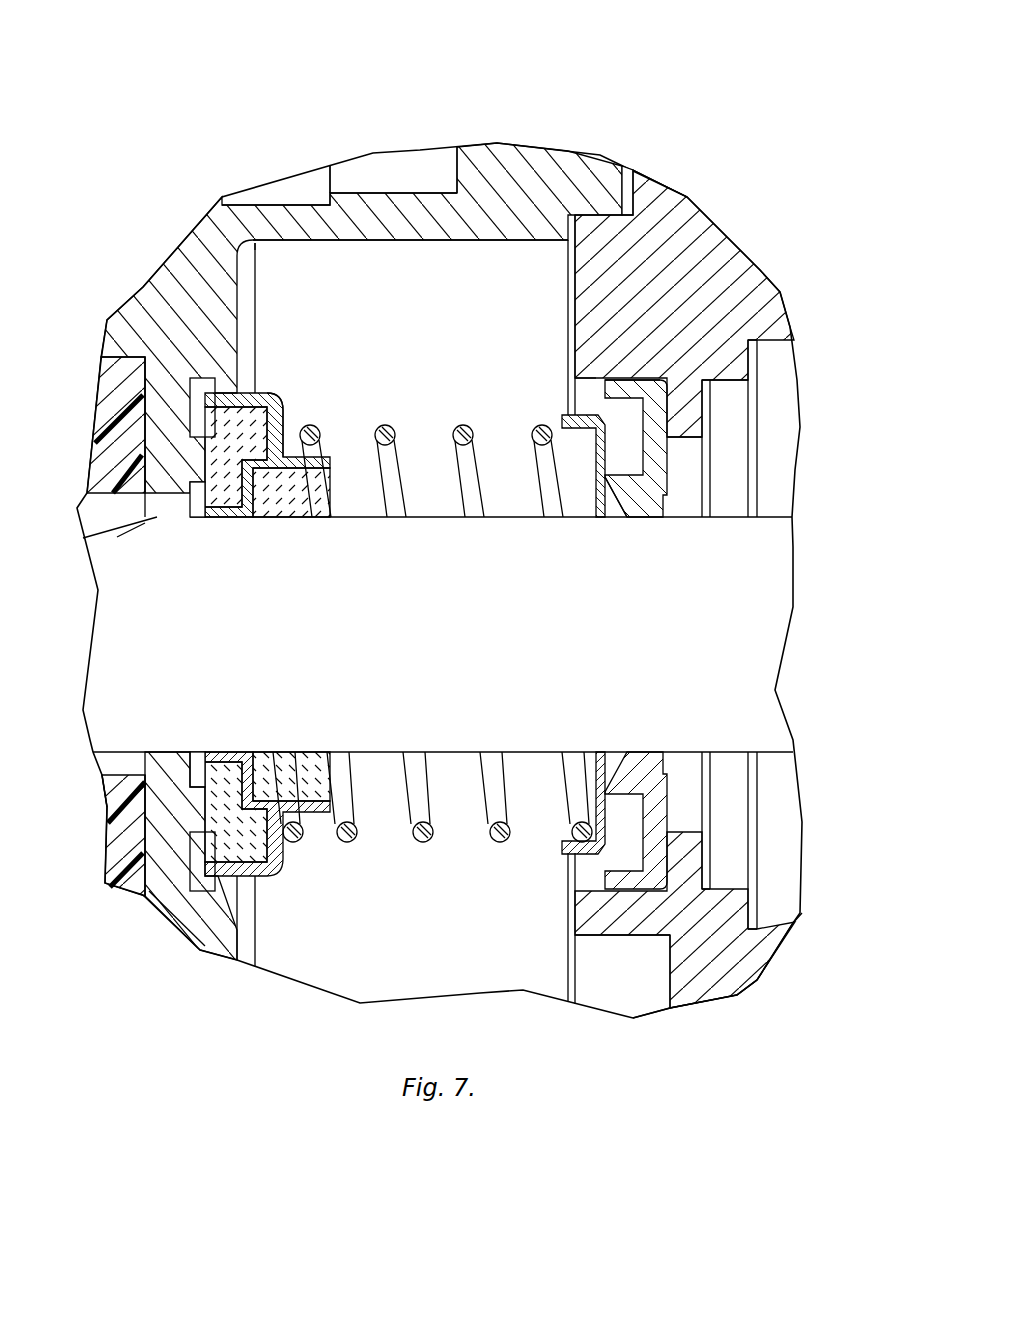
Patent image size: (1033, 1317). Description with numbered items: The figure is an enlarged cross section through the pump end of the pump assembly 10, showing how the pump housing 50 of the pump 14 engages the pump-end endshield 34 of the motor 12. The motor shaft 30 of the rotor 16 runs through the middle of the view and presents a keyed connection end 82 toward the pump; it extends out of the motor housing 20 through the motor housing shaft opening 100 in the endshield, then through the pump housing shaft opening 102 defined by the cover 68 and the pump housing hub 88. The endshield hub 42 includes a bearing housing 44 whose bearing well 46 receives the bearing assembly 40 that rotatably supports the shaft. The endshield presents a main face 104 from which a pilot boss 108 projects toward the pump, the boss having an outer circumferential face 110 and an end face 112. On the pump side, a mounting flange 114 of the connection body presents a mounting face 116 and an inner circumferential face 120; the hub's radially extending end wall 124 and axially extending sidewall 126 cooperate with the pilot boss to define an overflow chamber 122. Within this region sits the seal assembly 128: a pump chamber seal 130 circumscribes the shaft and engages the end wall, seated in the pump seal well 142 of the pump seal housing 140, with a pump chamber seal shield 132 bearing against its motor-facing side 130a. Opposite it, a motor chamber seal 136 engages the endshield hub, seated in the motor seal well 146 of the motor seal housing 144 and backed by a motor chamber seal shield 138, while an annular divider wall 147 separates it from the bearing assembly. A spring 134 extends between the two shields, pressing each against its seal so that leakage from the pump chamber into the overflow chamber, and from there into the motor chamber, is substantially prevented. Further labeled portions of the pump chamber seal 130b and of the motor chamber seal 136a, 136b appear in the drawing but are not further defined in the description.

The pump assembly 10 is at (613, 65).
The motor 12 is at (713, 1103).
The pump 14 is at (172, 960).
The rotor 16 is at (740, 618).
The motor housing 20 is at (700, 220).
The motor shaft 30 is at (750, 572).
The pump-end endshield 34 is at (743, 997).
The bearing assembly 40 is at (777, 445).
The endshield hub 42 is at (740, 367).
The bearing housing 44 is at (713, 883).
The bearing well 46 is at (795, 927).
The pump housing 50 is at (187, 237).
The cover 68 is at (120, 878).
The keyed connection end 82 is at (107, 703).
The pump housing hub 88 is at (300, 200).
The motor housing shaft opening 100 is at (683, 498).
The pump housing shaft opening 102 is at (147, 780).
The main face 104 is at (670, 965).
The pilot boss 108 is at (593, 227).
The outer circumferential face 110 is at (620, 937).
The end face 112 is at (570, 920).
The mounting flange 114 is at (548, 160).
The mounting face 116 is at (637, 200).
The inner circumferential face 120 is at (623, 208).
The overflow chamber 122 is at (467, 268).
The end wall 124 is at (225, 273).
The sidewall 126 is at (372, 230).
The seal assembly 128 is at (437, 410).
The pump chamber seal 130 is at (227, 425).
The motor-facing side 130a is at (332, 497).
The seal portion 130b is at (180, 485).
The pump chamber seal shield 132 is at (277, 410).
The spring 134 is at (397, 447).
The motor chamber seal 136 is at (693, 383).
The carrier end 136a is at (667, 810).
The carrier lip 136b is at (610, 490).
The motor chamber seal shield 138 is at (587, 422).
The pump seal housing 140 is at (195, 400).
The pump seal well 142 is at (185, 405).
The motor seal housing 144 is at (658, 375).
The motor seal well 146 is at (568, 370).
The divider wall 147 is at (690, 418).